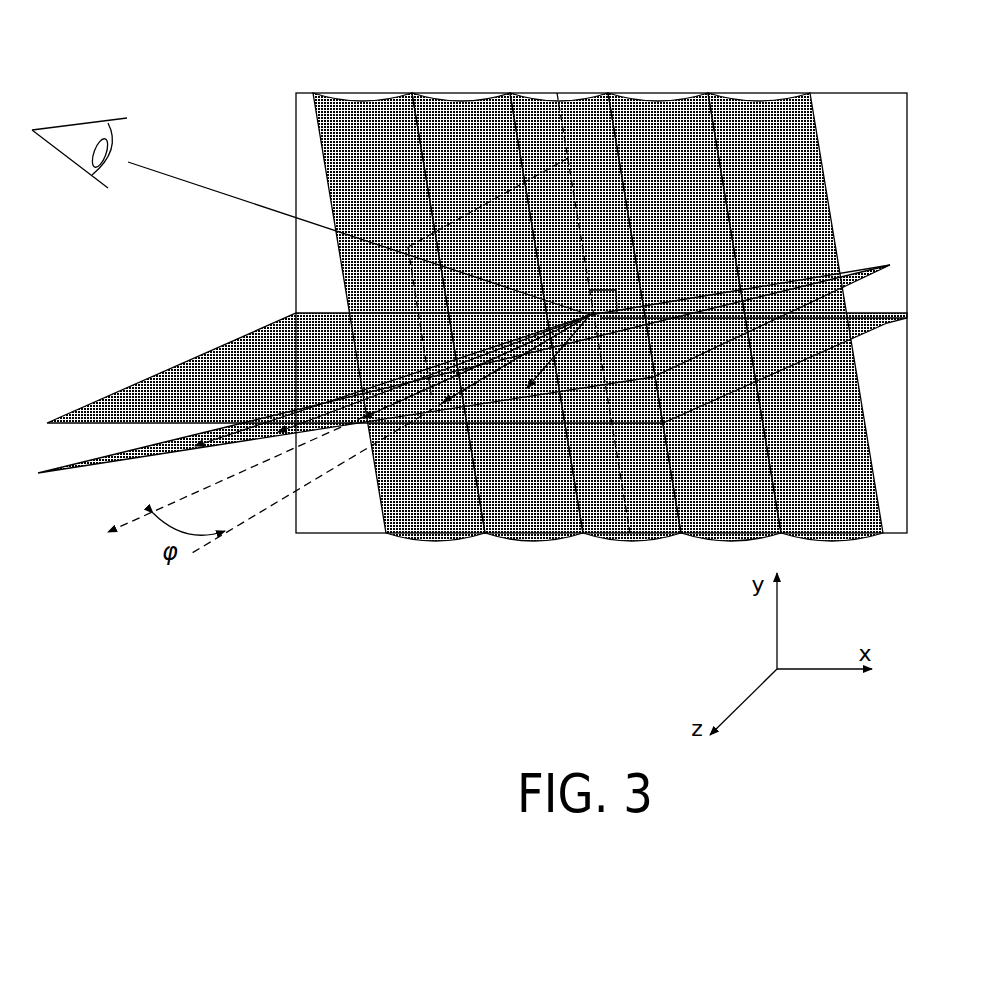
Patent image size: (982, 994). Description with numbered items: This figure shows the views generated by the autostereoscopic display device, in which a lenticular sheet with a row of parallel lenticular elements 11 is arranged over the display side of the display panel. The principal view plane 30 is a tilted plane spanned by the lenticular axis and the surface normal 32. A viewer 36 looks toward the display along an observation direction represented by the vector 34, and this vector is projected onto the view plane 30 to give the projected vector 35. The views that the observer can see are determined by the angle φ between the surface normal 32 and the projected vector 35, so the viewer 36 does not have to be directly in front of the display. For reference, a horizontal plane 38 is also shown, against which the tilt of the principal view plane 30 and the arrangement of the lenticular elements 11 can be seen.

The lenticular elements 11 is at (753, 45).
The principal view plane 30 is at (890, 265).
The surface normal 32 is at (150, 513).
The observation direction vector 34 is at (205, 183).
The projected vector 35 is at (257, 503).
The viewer 36 is at (67, 123).
The horizontal plane 38 is at (887, 323).